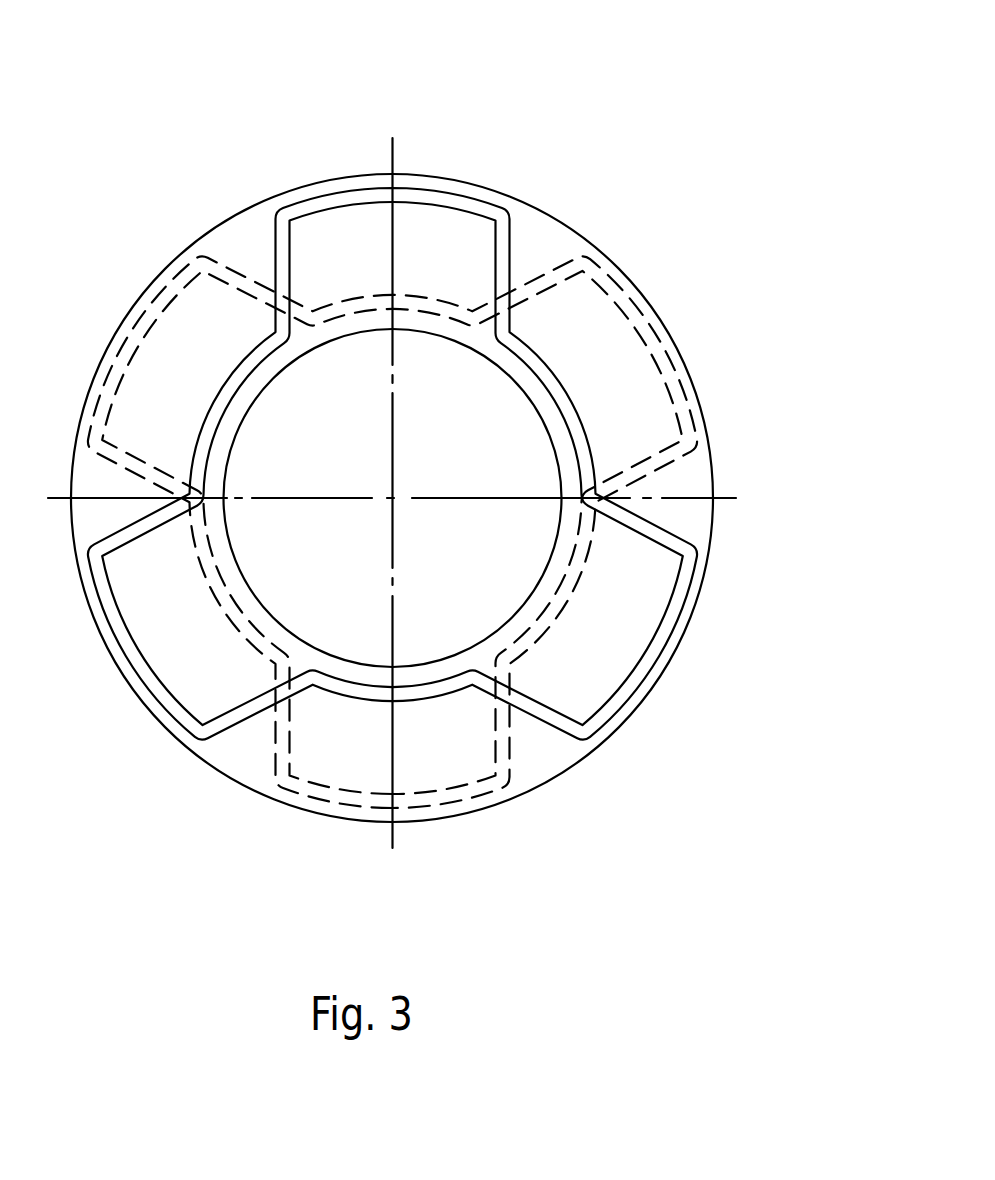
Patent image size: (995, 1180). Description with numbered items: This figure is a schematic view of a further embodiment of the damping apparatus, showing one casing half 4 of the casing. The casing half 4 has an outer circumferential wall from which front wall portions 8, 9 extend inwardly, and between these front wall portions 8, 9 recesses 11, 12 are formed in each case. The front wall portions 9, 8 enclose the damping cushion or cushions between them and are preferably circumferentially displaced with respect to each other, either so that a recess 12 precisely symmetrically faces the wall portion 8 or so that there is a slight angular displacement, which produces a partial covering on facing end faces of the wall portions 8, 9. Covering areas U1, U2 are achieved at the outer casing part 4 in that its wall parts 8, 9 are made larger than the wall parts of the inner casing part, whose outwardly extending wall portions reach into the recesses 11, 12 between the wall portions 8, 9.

The casing half 4 is at (709, 343).
The front wall portion 8 is at (621, 400).
The front wall portion 9 is at (428, 225).
The recess 11 is at (331, 187).
The recess 12 is at (618, 287).
The covering area U1 is at (687, 512).
The covering area U2 is at (527, 247).